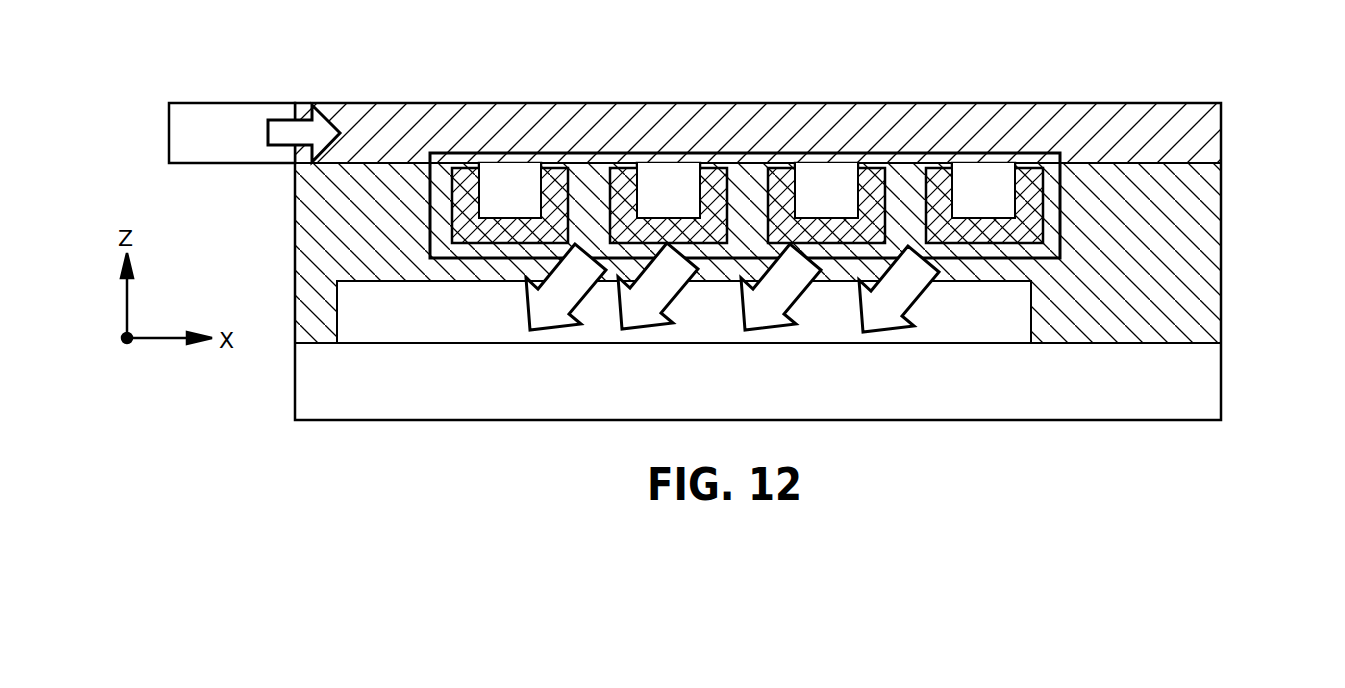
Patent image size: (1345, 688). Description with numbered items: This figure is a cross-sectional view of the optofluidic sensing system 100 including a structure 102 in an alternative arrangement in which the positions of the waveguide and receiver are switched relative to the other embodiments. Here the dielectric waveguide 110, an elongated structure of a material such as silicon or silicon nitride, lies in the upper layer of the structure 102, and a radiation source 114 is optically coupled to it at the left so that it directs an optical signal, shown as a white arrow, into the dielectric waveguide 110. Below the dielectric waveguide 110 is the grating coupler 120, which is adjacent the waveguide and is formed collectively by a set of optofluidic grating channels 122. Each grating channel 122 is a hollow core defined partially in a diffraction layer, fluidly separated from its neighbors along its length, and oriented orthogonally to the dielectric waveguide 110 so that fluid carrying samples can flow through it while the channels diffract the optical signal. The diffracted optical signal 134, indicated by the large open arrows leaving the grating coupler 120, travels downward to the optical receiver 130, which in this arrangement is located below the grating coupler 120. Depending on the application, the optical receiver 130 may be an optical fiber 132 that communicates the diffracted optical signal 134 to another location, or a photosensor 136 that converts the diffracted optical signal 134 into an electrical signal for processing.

The optofluidic sensing system 100 is at (806, 227).
The structure 102 is at (791, 229).
The dielectric waveguide 110 is at (957, 128).
The radiation source 114 is at (228, 166).
The grating coupler 120 is at (1085, 213).
The optofluidic grating channel 122 is at (831, 148).
The optical receiver 130 is at (684, 312).
The optical fiber 132 is at (684, 312).
The diffracted optical signal 134 is at (762, 315).
The photosensor 136 is at (508, 335).